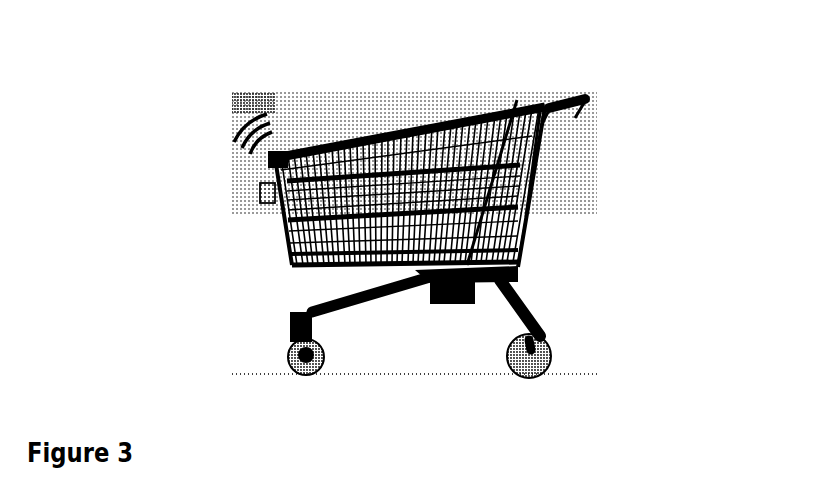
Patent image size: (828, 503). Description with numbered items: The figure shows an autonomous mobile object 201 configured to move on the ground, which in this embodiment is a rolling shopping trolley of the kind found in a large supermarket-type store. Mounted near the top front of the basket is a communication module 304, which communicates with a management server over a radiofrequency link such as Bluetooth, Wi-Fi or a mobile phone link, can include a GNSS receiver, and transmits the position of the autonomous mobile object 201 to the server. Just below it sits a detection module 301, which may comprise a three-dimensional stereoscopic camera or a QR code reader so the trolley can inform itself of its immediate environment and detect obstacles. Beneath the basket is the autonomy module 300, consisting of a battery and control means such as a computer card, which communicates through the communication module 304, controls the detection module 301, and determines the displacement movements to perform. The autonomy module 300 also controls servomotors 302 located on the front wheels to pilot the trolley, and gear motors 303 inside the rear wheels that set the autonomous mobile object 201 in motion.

The autonomous mobile object 201 is at (350, 145).
The autonomy module 300 is at (453, 303).
The detection module 301 is at (262, 190).
The servomotors 302 is at (285, 322).
The gear motors 303 is at (553, 354).
The communication module 304 is at (272, 158).